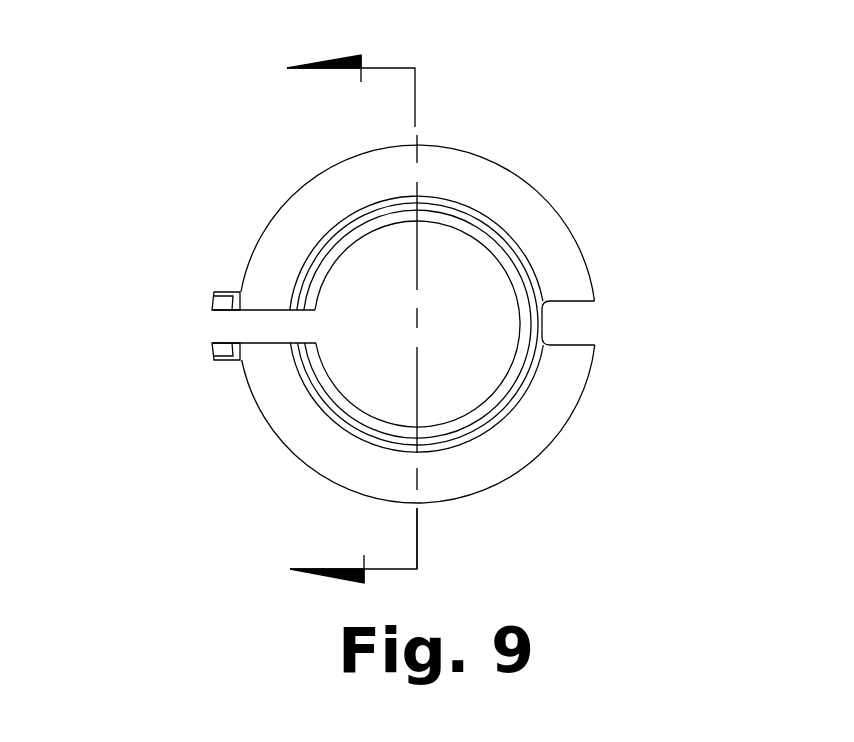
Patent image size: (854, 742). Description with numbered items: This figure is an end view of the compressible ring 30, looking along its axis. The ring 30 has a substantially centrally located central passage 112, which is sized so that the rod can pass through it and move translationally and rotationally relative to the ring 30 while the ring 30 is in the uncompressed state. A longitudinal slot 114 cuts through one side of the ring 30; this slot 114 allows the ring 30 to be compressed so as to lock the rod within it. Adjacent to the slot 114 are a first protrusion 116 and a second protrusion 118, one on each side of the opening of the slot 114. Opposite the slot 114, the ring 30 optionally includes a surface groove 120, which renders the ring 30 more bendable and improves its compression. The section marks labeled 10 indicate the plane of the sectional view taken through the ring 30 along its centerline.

The section line 10- 10 is at (334, 320).
The compressible ring 30 is at (656, 198).
The central passage 112 is at (465, 283).
The longitudinal slot 114 is at (198, 327).
The first protrusion 116 is at (227, 292).
The second protrusion 118 is at (223, 362).
The surface groove 120 is at (578, 323).